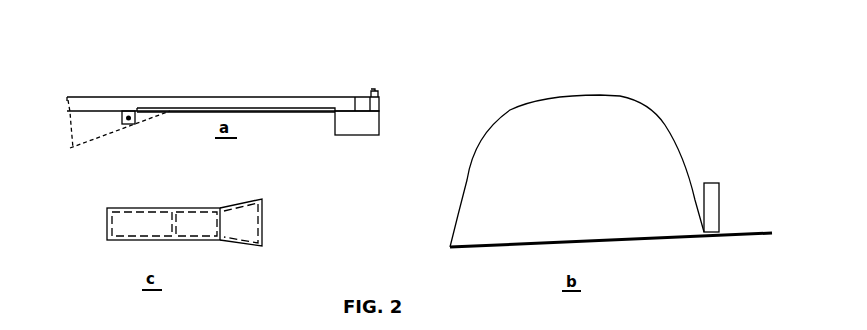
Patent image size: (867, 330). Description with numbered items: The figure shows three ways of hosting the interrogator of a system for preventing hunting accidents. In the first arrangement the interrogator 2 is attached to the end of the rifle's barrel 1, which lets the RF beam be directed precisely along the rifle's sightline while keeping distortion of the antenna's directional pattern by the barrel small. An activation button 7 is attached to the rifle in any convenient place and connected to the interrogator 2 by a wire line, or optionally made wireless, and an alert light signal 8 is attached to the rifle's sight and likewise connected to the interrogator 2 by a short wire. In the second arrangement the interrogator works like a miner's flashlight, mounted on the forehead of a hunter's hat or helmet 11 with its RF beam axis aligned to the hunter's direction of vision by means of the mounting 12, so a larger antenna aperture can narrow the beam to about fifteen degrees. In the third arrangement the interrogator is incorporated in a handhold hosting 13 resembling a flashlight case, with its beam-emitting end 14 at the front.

The rifle's barrel 1 is at (325, 94).
The interrogator 2 is at (367, 138).
The activation button 7 is at (137, 123).
The alert light signal 8 is at (376, 88).
The dome housing 11 is at (681, 132).
The post 12 is at (727, 190).
The cartridge body 13 is at (140, 204).
The nozzle 14 is at (202, 235).